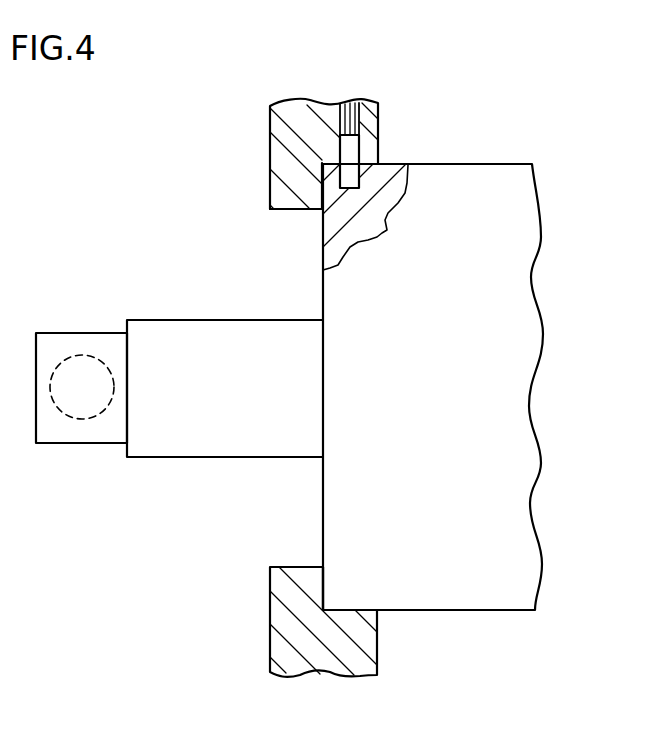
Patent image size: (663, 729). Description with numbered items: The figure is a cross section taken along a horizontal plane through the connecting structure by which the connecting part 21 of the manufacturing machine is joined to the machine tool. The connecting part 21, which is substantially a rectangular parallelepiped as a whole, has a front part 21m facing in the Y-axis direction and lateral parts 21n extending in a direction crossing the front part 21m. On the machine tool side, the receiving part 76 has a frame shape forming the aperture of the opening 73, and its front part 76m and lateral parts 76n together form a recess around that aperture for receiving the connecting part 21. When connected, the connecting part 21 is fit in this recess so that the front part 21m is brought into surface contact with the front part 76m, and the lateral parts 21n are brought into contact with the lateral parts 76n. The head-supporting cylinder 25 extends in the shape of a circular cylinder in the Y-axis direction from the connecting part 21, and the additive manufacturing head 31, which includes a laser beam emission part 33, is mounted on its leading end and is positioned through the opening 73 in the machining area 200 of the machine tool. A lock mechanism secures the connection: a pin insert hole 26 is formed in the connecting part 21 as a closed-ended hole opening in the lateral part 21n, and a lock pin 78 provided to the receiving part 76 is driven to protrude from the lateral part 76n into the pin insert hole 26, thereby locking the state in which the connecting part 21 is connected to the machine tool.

The machining area 200 is at (170, 180).
The connecting part 21 is at (471, 177).
The front part 21m is at (321, 591).
The lateral part 21n is at (346, 611).
The head-supporting cylinder 25 is at (228, 332).
The pin insert hole 26 is at (352, 176).
The additive manufacturing head 31 is at (76, 330).
The laser beam emission part 33 is at (90, 419).
The opening 73 is at (290, 212).
The receiving part 76 is at (357, 653).
The front part 76m is at (323, 580).
The lateral part 76n is at (349, 611).
The lock pin 78 is at (340, 137).